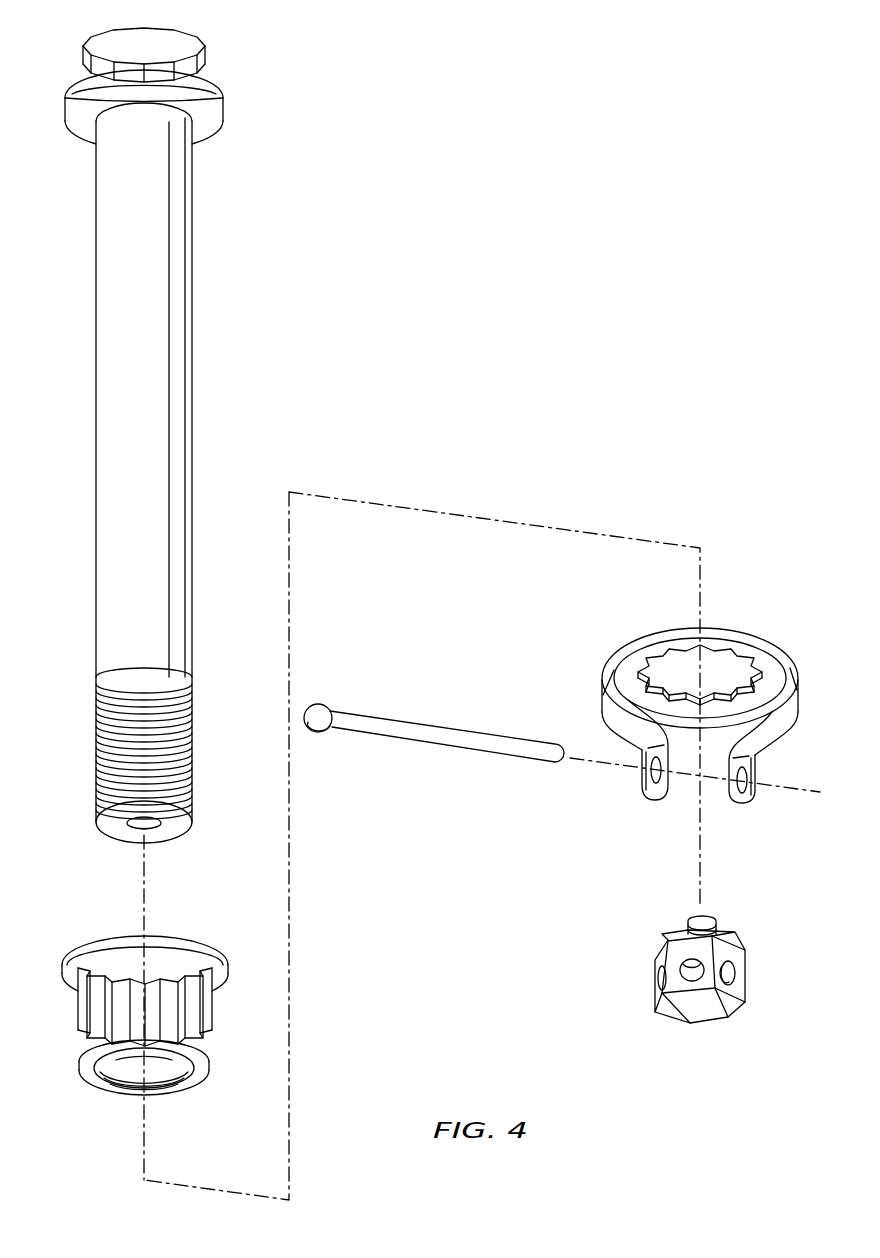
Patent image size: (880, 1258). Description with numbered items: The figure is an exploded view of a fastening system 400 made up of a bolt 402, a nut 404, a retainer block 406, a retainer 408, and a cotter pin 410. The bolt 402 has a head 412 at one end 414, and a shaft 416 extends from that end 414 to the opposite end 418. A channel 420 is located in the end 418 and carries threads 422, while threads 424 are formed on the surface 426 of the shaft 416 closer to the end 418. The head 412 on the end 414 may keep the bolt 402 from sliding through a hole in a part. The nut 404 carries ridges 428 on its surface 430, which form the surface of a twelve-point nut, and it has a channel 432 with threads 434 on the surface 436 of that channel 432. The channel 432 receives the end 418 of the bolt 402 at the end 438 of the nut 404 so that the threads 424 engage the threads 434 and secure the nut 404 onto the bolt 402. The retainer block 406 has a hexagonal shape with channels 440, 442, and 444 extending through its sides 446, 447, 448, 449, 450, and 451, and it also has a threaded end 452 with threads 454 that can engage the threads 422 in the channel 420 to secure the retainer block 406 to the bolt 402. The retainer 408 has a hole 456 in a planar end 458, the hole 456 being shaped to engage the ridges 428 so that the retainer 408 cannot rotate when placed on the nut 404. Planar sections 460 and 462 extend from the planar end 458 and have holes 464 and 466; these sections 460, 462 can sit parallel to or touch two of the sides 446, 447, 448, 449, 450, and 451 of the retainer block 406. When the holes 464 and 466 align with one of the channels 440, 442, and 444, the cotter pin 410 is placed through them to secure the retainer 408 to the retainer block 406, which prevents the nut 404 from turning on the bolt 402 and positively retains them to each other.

The fastening system 400 is at (500, 290).
The bolt 402 is at (95, 218).
The nut 404 is at (90, 943).
The retainer block 406 is at (647, 1014).
The retainer 408 is at (768, 642).
The cotter pin 410 is at (447, 748).
The head 412 is at (214, 82).
The end 414 is at (118, 29).
The shaft 416 is at (96, 292).
The end 418 is at (177, 828).
The channel 420 is at (134, 832).
The threads 422 is at (152, 829).
The threads 424 is at (97, 751).
The surface 426 is at (107, 356).
The ridges 428 is at (163, 1008).
The surface 430 is at (97, 1038).
The channel 432 is at (127, 1085).
The threads 434 is at (157, 1080).
The surface 436 is at (183, 1085).
The end 438 is at (212, 953).
The channel 440 is at (660, 970).
The channel 442 is at (685, 960).
The channel 444 is at (737, 968).
The side 446 is at (732, 952).
The side 447 is at (702, 982).
The side 448 is at (662, 995).
The side 449 is at (665, 1018).
The side 450 is at (718, 1020).
The side 451 is at (740, 1012).
The threaded end 452 is at (697, 915).
The threads 454 is at (717, 932).
The hole 456 is at (688, 663).
The planar end 458 is at (722, 632).
The planar section 460 is at (650, 787).
The planar section 462 is at (752, 792).
The hole 464 is at (650, 770).
The hole 466 is at (722, 787).